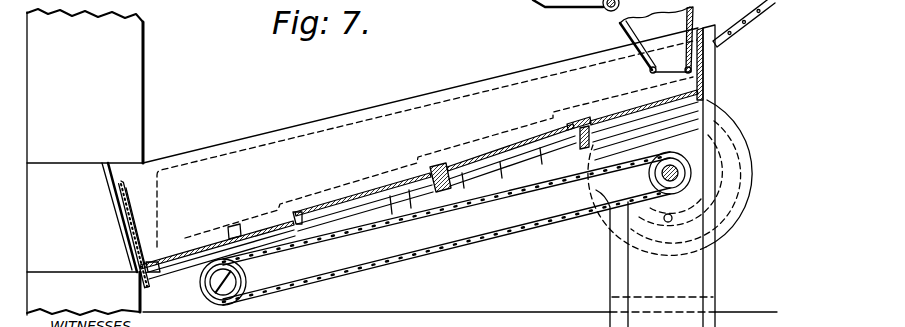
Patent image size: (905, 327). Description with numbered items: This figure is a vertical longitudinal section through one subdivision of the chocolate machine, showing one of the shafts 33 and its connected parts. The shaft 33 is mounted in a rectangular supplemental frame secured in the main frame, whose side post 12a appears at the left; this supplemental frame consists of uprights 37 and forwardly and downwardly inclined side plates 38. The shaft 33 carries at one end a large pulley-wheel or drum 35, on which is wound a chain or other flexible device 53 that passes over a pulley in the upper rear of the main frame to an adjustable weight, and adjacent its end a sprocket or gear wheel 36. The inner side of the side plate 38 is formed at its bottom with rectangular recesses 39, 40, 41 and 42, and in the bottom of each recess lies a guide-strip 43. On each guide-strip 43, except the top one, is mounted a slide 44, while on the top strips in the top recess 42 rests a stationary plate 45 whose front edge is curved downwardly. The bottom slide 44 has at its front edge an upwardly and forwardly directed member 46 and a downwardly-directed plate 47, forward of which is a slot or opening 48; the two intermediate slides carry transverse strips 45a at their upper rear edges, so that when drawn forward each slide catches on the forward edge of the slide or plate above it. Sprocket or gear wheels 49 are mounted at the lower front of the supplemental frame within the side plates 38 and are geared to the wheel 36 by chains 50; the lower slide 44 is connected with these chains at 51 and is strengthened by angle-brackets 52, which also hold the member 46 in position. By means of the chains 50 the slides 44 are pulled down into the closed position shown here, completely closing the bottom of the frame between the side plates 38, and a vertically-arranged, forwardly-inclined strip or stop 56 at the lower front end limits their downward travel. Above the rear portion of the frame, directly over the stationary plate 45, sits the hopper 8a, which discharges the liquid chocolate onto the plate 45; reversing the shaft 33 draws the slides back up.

The side post 12a is at (85, 162).
The strip or stop 56 is at (103, 163).
The upwardly and forwardly directed member 46 is at (121, 182).
The downwardly-directed plate 47 is at (147, 290).
The slot or opening 48 is at (154, 268).
The side plate 38 is at (438, 92).
The rectangular recess 39 is at (419, 173).
The angle-bracket 52 is at (207, 237).
The connection of slides with chains 51 is at (237, 226).
The rectangular recess 40 is at (367, 193).
The transverse strip 45a is at (437, 190).
The rectangular recess 41 is at (515, 143).
The top recess 42 is at (585, 125).
The stationary plate 45 is at (620, 107).
The guide-strip 43 is at (390, 196).
The slide 44 is at (180, 250).
The sprocket or gear wheel 49 is at (246, 276).
The chain 50 is at (487, 248).
The shaft 33 is at (678, 172).
The pulley-wheel or drum 35 is at (727, 110).
The sprocket or gear wheel 36 is at (647, 168).
The upright 37 is at (704, 268).
The hopper 8a is at (620, 29).
The chain or flexible device 53 is at (746, 33).